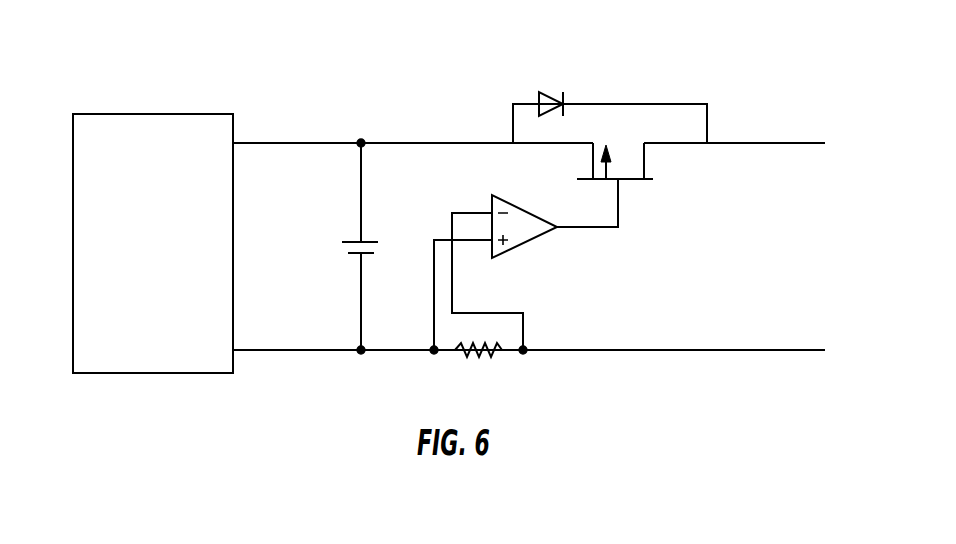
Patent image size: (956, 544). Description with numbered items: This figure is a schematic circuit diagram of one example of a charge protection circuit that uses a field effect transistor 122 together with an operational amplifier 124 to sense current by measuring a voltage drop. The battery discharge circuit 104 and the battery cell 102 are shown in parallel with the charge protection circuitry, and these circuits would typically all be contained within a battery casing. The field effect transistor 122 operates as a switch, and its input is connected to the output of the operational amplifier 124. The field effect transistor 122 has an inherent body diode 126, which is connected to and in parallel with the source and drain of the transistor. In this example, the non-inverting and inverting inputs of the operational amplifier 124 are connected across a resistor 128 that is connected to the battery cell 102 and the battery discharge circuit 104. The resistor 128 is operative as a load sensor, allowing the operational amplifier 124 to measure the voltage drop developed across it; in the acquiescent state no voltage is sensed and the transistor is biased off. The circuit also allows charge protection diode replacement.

The battery discharge circuit 104 is at (150, 114).
The battery cell 102 is at (370, 237).
The inherent body diode 126 is at (537, 100).
The field effect transistor 122 is at (635, 163).
The operational amplifier 124 is at (520, 232).
The resistor 128 is at (480, 355).